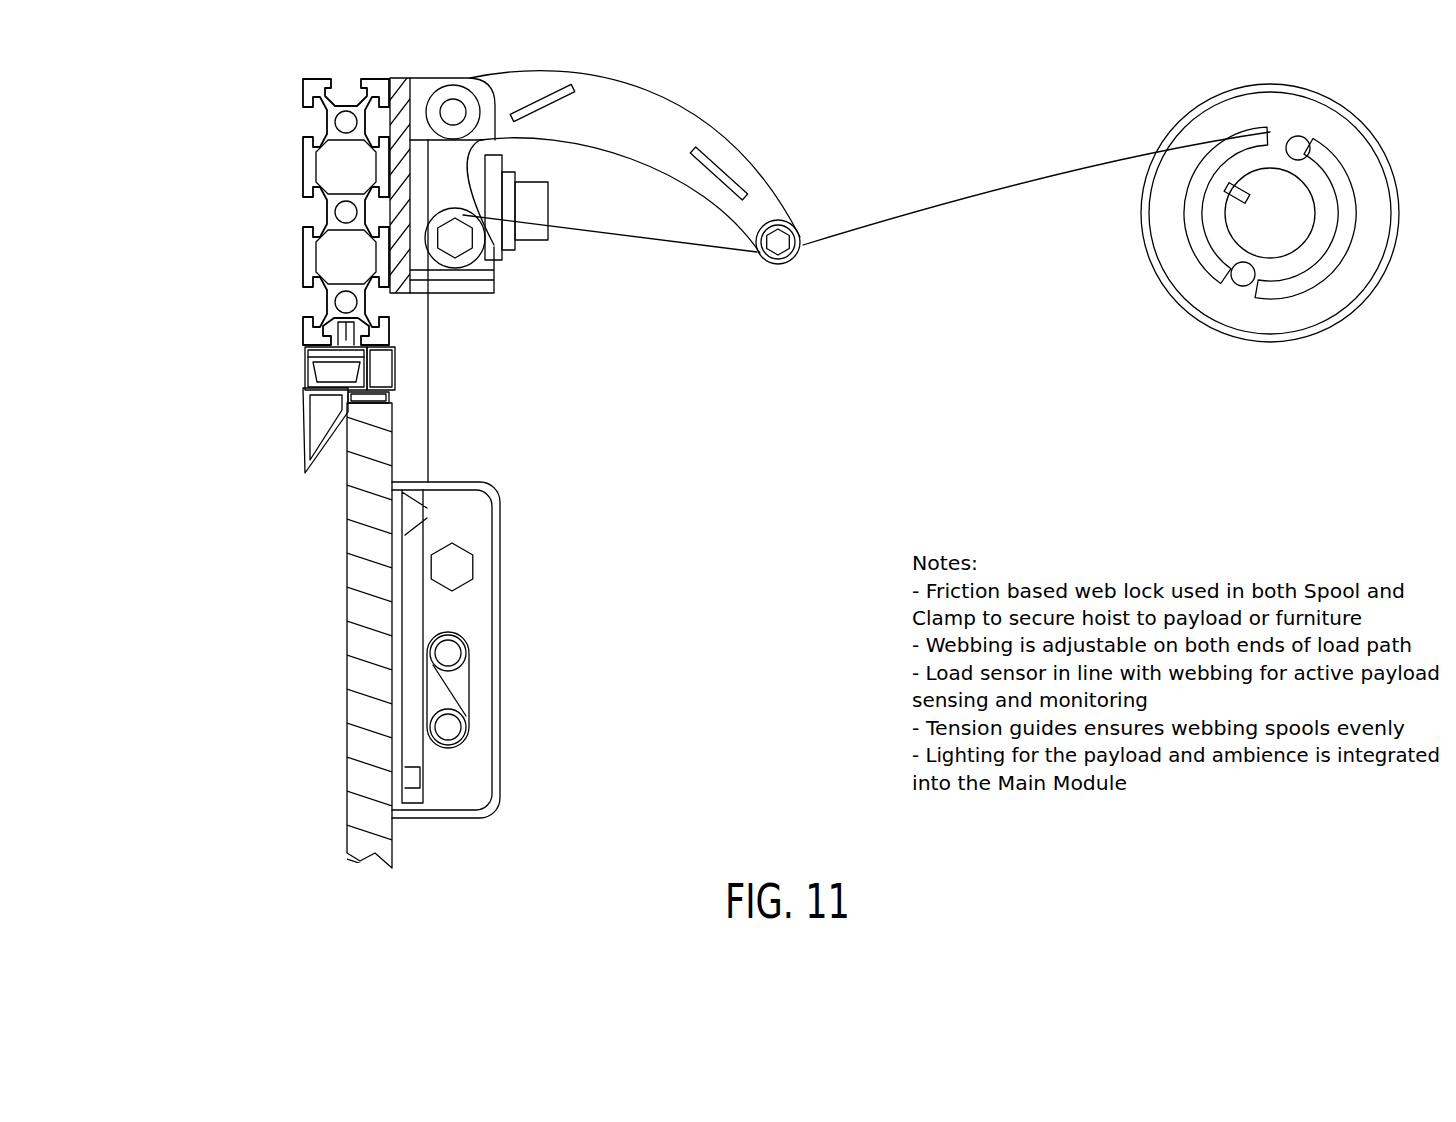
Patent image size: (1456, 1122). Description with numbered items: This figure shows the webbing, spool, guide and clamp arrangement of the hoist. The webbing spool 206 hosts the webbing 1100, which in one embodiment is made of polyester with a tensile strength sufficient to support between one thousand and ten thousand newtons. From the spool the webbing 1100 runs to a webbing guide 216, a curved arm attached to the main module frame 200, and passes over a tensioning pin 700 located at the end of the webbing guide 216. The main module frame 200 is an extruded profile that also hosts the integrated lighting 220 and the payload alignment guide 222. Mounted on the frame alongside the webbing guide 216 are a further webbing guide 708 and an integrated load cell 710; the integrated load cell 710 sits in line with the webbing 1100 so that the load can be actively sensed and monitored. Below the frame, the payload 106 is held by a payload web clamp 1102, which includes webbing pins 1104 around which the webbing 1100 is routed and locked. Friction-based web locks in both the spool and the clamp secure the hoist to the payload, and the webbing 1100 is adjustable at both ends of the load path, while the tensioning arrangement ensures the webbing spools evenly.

The main module frame 200 is at (300, 218).
The integrated lighting 220 is at (300, 362).
The payload alignment guide 222 is at (290, 428).
The payload 106 is at (348, 718).
The payload web clamp 1102 is at (500, 590).
The webbing pins 1104 is at (448, 653).
The webbing guide 708 is at (453, 248).
The integrated load cell 710 is at (533, 245).
The tensioning pin 700 is at (800, 250).
The webbing guide 216 is at (673, 110).
The webbing 1100 is at (960, 205).
The webbing spool 206 is at (1272, 315).